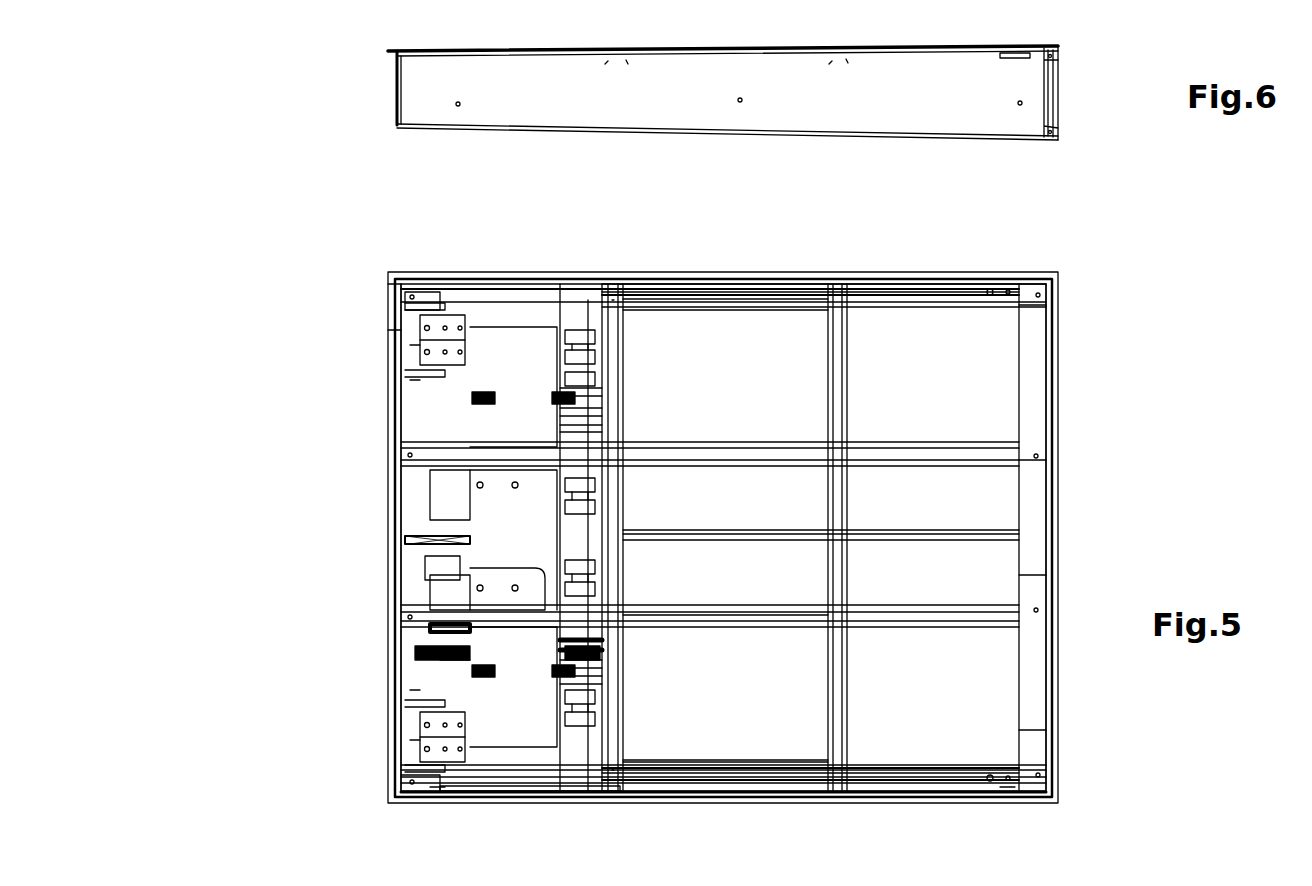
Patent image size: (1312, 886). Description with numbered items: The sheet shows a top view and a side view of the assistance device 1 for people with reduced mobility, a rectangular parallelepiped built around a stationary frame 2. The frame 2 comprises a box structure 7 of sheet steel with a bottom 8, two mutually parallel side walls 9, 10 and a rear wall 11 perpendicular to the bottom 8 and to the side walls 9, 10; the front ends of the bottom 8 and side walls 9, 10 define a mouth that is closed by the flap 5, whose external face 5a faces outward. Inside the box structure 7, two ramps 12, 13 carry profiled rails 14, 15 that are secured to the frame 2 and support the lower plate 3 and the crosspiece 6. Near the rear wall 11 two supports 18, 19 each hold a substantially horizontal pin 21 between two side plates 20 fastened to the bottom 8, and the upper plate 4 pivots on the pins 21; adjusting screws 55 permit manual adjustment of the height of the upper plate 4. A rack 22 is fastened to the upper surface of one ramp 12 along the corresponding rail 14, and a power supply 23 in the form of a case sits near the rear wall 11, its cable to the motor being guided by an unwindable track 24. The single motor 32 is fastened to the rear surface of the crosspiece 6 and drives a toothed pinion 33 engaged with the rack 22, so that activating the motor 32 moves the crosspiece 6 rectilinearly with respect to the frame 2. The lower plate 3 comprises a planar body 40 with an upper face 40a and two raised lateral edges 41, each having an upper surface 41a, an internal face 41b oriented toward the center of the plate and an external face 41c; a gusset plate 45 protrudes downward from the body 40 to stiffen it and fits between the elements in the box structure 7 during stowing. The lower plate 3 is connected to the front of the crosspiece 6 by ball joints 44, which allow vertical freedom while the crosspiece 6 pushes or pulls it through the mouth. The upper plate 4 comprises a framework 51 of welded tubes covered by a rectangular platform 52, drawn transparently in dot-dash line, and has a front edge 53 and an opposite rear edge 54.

In FIG. 6, the assistance device 1 is at (1060, 180).
In FIG. 5, the assistance device 1 is at (1105, 289).
In FIG. 6, the frame 2 is at (840, 120).
In FIG. 5, the frame 2 is at (590, 268).
In FIG. 5, the lower plate 3 is at (1003, 370).
In FIG. 6, the upper plate 4 is at (1003, 47).
In FIG. 5, the upper plate 4 is at (411, 296).
In FIG. 6, the flap 5 is at (1062, 92).
In FIG. 5, the flap 5 is at (1062, 497).
In FIG. 5, the external face 5a is at (1042, 735).
In FIG. 5, the crosspiece 6 is at (520, 337).
In FIG. 6, the box structure 7 is at (676, 105).
In FIG. 5, the box structure 7 is at (900, 290).
In FIG. 6, the bottom 8 is at (583, 130).
In FIG. 5, the bottom 8 is at (535, 772).
In FIG. 6, the side wall 9 is at (914, 106).
In FIG. 5, the side wall 9 is at (950, 797).
In FIG. 5, the side wall 10 is at (720, 280).
In FIG. 6, the rear wall 11 is at (397, 89).
In FIG. 5, the rear wall 11 is at (401, 470).
In FIG. 5, the ramp 12 is at (600, 680).
In FIG. 5, the ramp 13 is at (600, 420).
In FIG. 5, the rail 14 is at (604, 655).
In FIG. 5, the rail 15 is at (600, 394).
In FIG. 5, the support 18 is at (372, 750).
In FIG. 5, the support 19 is at (386, 304).
In FIG. 5, the side plate 20 is at (410, 303).
In FIG. 5, the pin 21 is at (440, 380).
In FIG. 5, the rack 22 is at (450, 628).
In FIG. 5, the power supply 23 is at (445, 505).
In FIG. 5, the unwindable track 24 is at (440, 540).
In FIG. 5, the motor 32 is at (440, 598).
In FIG. 5, the pinion 33 is at (440, 655).
In FIG. 5, the body 40 is at (1000, 405).
In FIG. 5, the upper face 40a is at (905, 385).
In FIG. 5, the raised lateral edge 41 is at (935, 290).
In FIG. 5, the upper surface 41a is at (780, 300).
In FIG. 5, the internal face 41b is at (745, 307).
In FIG. 5, the external face 41c is at (855, 295).
In FIG. 5, the ball joint 44 is at (600, 345).
In FIG. 5, the gusset plate 45 is at (725, 530).
In FIG. 5, the framework 51 is at (780, 620).
In FIG. 5, the platform 52 is at (455, 650).
In FIG. 5, the front edge 53 is at (1022, 575).
In FIG. 5, the rear edge 54 is at (440, 565).
In FIG. 5, the adjusting screw 55 is at (445, 335).